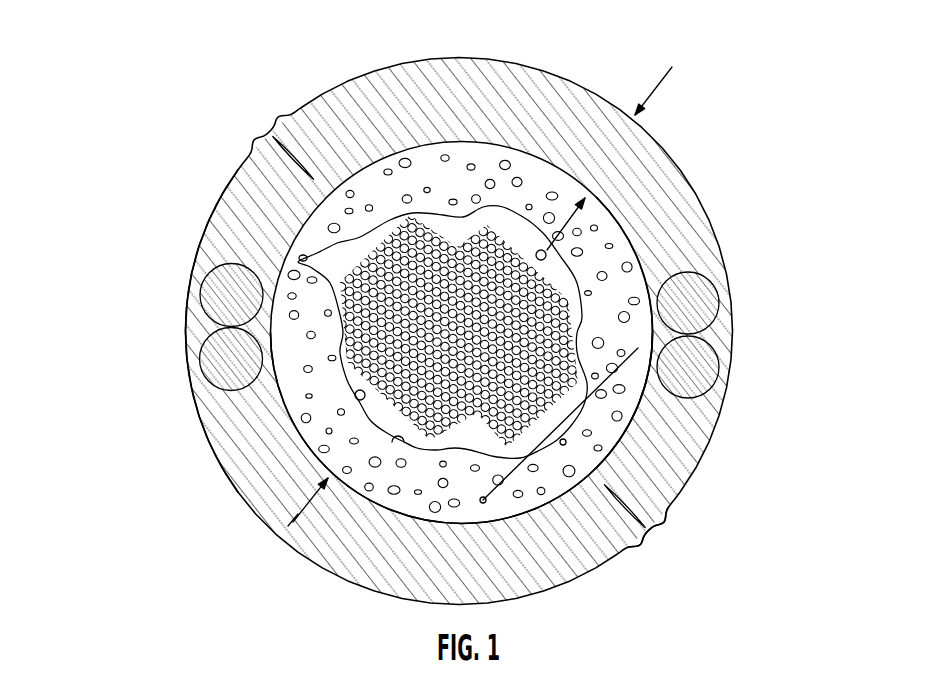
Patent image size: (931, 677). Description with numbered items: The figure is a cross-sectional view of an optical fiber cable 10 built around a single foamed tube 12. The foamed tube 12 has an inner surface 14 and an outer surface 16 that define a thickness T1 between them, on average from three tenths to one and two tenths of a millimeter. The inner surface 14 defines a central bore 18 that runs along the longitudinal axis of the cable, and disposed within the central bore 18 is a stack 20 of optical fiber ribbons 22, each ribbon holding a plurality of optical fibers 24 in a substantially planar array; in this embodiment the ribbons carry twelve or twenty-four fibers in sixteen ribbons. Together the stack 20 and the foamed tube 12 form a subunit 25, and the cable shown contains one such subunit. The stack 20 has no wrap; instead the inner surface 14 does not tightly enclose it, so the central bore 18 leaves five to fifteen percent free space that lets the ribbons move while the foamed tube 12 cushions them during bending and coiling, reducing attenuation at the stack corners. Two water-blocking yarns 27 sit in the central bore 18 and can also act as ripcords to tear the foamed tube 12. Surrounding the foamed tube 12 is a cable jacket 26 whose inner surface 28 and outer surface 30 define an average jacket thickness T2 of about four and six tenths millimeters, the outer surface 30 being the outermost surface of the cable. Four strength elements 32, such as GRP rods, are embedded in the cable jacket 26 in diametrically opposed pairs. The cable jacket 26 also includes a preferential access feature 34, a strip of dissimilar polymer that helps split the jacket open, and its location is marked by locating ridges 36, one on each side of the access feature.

The optical fiber cable 10 is at (180, 123).
The foamed tube 12 is at (327, 432).
The inner surface 14 is at (418, 512).
The outer surface 16 is at (533, 510).
The central bore 18 is at (515, 218).
The stack 20 is at (566, 443).
The optical fiber ribbons 22 is at (460, 254).
The optical fibers 24 is at (455, 282).
The subunit 25 is at (645, 267).
The cable jacket 26 is at (653, 177).
The water-blocking yarn 27 is at (356, 392).
The inner surface 28 is at (301, 257).
The outer surface 30 is at (197, 417).
The strength elements 32 is at (693, 362).
The preferential access feature 34 is at (632, 502).
The locating ridges 36 is at (650, 540).
The thickness T1 is at (293, 520).
The jacket thickness T2 is at (660, 85).